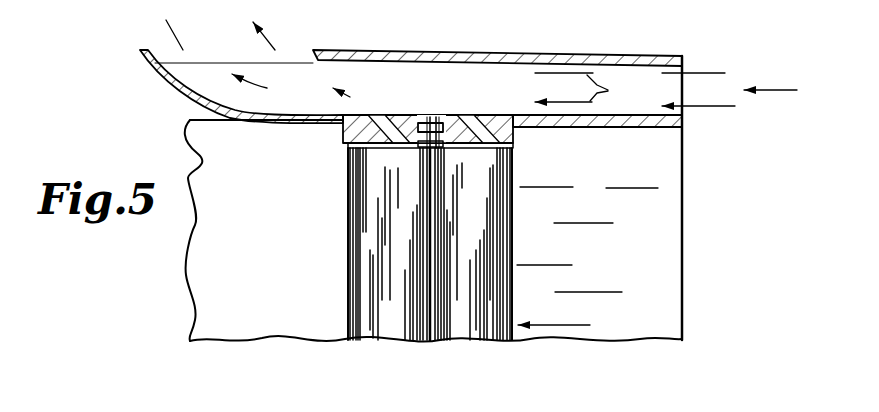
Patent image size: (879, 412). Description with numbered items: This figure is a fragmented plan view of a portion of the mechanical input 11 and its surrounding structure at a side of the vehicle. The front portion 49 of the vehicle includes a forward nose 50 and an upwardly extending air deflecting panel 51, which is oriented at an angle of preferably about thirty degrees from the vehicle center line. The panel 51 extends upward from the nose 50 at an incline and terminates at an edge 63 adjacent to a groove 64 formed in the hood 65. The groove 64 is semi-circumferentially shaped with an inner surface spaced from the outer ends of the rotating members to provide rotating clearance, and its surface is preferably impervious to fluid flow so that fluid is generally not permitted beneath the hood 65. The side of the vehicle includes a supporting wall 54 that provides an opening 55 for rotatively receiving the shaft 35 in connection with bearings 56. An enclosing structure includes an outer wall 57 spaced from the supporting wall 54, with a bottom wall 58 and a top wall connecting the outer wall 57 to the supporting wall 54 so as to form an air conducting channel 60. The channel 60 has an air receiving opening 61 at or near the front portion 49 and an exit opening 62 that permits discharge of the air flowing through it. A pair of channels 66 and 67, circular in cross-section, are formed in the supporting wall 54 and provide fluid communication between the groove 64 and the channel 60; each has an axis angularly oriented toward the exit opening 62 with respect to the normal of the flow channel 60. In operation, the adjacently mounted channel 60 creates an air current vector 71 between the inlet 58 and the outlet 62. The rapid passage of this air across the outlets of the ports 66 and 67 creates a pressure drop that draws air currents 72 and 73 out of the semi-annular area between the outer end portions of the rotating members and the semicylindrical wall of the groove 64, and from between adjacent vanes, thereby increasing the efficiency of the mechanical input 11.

The mechanical input 11 is at (447, 351).
The shaft 35 is at (439, 116).
The front portion 49 is at (708, 144).
The forward nose 50 is at (684, 286).
The air deflecting panel 51 is at (668, 232).
The supporting wall 54 is at (653, 118).
The opening 55 is at (431, 115).
The bearings 56 is at (421, 121).
The outer wall 57 is at (649, 86).
The bottom wall 58 is at (670, 88).
The air conducting channel 60 is at (564, 98).
The air receiving opening 61 is at (663, 69).
The exit opening 62 is at (293, 76).
The edge 63 is at (512, 318).
The groove 64 is at (357, 330).
The hood 65 is at (272, 342).
The channel 66 is at (483, 122).
The channel 67 is at (372, 126).
The air current vector 71 is at (608, 88).
The air current 72 is at (452, 93).
The air current 73 is at (388, 161).